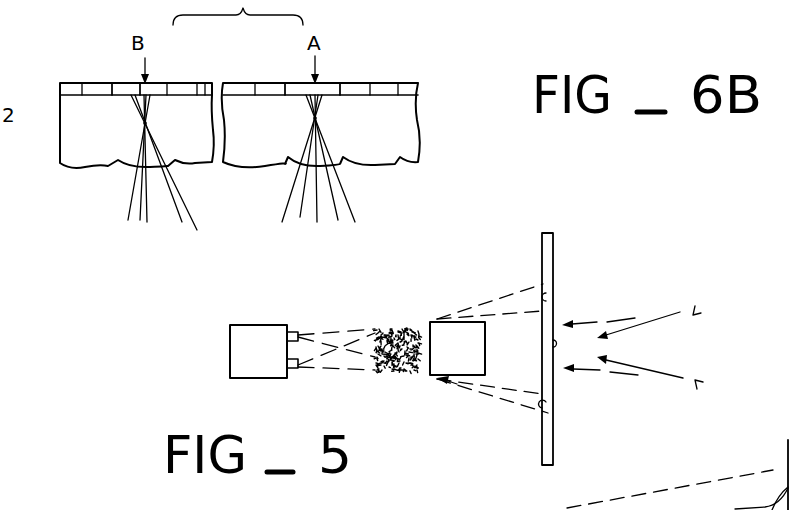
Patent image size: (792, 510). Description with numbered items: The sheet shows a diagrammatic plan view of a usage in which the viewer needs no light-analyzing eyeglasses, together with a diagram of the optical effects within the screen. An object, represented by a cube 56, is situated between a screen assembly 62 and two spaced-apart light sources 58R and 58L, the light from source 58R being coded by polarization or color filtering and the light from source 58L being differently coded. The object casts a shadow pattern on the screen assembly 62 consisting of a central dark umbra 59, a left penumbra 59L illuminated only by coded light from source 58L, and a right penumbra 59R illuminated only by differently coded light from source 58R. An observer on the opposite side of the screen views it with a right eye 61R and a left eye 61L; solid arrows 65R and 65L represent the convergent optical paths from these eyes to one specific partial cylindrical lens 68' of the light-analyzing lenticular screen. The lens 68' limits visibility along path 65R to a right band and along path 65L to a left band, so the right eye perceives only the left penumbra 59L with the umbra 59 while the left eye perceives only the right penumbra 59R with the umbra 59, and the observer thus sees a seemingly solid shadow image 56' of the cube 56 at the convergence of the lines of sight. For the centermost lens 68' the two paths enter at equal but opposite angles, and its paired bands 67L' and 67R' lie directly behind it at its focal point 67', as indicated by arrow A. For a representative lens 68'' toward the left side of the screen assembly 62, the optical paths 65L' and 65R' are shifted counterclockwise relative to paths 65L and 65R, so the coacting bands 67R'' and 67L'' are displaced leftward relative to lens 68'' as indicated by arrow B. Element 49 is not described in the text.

In FIG. 6B, the screen assembly 62 is at (425, 122).
In FIG. 5, the screen assembly 62 is at (555, 231).
In FIG. 6B, the focal point of lens 67' is at (232, 130).
In FIG. 6B, the right light-analyzing band 67R'' is at (85, 69).
In FIG. 6B, the left light-analyzing band 67L'' is at (175, 67).
In FIG. 6B, the right light-analyzing band 67R' is at (269, 66).
In FIG. 6B, the left light-analyzing band 67L' is at (371, 65).
In FIG. 6B, the partial cylindrical lens 68'' is at (109, 191).
In FIG. 6B, the partial cylindrical lens 68' is at (275, 187).
In FIG. 5, the partial cylindrical lens 68' is at (527, 332).
In FIG. 6B, the optical path 65L' is at (128, 184).
In FIG. 6B, the optical path 65R' is at (180, 176).
In FIG. 6B, the optical path 65L is at (308, 181).
In FIG. 5, the optical path 65L is at (656, 362).
In FIG. 6B, the optical path 65R is at (358, 158).
In FIG. 5, the optical path 65R is at (628, 332).
In FIG. 5, the light source 58L is at (298, 332).
In FIG. 5, the light source 58R is at (292, 369).
In FIG. 5, the shadow image 56' is at (412, 327).
In FIG. 5, the cube 56 is at (457, 348).
In FIG. 5, the left penumbra 59L is at (546, 297).
In FIG. 5, the right penumbra 59R is at (546, 406).
In FIG. 5, the umbra 59 is at (542, 372).
In FIG. 5, the right eye 61R is at (695, 311).
In FIG. 5, the left eye 61L is at (698, 384).
In FIG. 5, the lens 49 is at (788, 453).